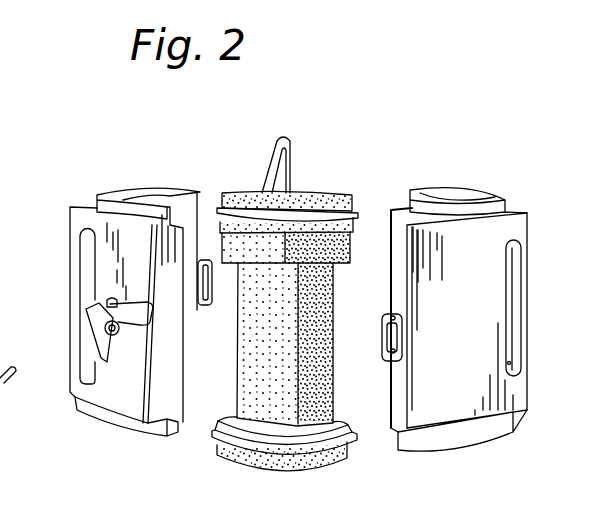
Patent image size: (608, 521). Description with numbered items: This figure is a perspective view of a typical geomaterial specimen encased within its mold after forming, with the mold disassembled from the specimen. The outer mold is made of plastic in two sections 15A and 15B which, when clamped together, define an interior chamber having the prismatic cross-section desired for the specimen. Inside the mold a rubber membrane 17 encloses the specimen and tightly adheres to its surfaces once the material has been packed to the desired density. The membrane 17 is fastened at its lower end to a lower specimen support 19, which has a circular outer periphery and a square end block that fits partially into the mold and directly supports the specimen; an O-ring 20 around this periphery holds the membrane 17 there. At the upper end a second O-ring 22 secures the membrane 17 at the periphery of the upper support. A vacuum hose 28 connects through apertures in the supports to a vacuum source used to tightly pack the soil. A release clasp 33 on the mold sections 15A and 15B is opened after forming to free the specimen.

The mold section 15A is at (102, 238).
The mold section 15B is at (493, 275).
The rubber membrane 17 is at (317, 308).
The lower specimen support 19 is at (263, 444).
The O-ring 20 is at (328, 463).
The O-ring 22 is at (313, 220).
The vacuum hose 28 is at (275, 147).
The release clasp 33 is at (118, 343).